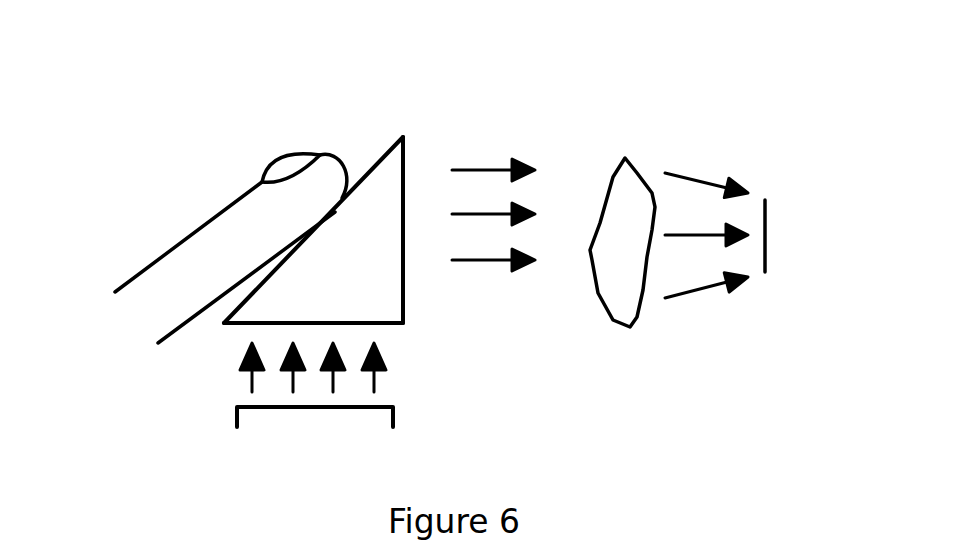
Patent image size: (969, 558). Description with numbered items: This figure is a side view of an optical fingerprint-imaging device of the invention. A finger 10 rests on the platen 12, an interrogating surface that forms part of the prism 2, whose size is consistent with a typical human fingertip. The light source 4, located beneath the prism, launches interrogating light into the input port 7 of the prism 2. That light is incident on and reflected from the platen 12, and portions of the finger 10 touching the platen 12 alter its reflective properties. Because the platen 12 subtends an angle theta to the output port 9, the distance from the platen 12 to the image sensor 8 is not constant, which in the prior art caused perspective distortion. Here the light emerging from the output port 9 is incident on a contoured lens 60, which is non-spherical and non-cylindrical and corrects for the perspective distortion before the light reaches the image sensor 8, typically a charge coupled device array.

The prism 2 is at (368, 200).
The platen 12 is at (362, 177).
The output port 9 is at (417, 273).
The input port 7 is at (404, 324).
The light source 4 is at (393, 415).
The finger 10 is at (177, 240).
The contoured lens 60 is at (647, 148).
The image sensor 8 is at (767, 260).